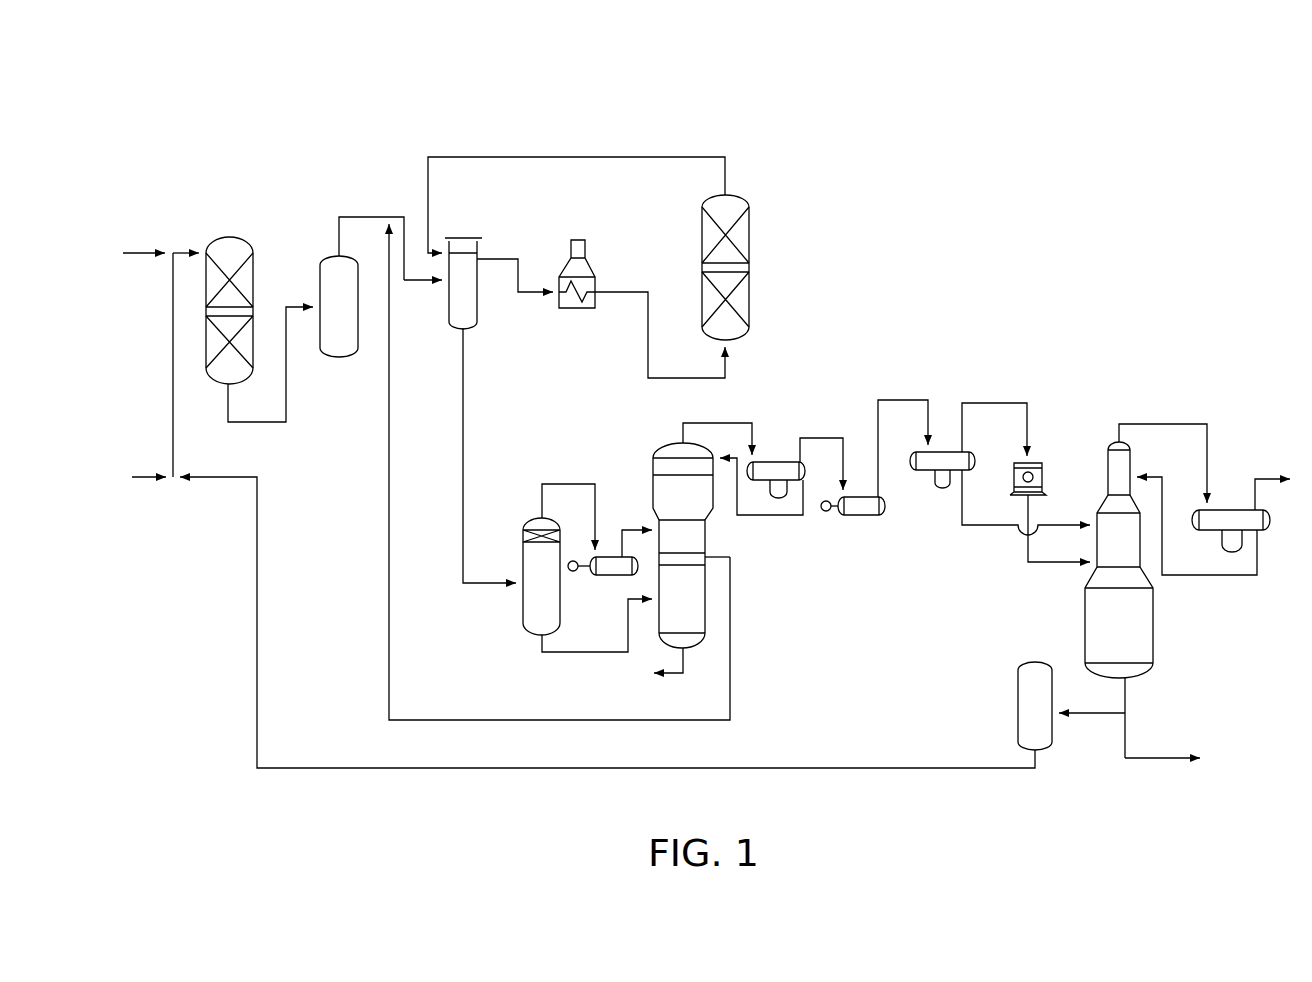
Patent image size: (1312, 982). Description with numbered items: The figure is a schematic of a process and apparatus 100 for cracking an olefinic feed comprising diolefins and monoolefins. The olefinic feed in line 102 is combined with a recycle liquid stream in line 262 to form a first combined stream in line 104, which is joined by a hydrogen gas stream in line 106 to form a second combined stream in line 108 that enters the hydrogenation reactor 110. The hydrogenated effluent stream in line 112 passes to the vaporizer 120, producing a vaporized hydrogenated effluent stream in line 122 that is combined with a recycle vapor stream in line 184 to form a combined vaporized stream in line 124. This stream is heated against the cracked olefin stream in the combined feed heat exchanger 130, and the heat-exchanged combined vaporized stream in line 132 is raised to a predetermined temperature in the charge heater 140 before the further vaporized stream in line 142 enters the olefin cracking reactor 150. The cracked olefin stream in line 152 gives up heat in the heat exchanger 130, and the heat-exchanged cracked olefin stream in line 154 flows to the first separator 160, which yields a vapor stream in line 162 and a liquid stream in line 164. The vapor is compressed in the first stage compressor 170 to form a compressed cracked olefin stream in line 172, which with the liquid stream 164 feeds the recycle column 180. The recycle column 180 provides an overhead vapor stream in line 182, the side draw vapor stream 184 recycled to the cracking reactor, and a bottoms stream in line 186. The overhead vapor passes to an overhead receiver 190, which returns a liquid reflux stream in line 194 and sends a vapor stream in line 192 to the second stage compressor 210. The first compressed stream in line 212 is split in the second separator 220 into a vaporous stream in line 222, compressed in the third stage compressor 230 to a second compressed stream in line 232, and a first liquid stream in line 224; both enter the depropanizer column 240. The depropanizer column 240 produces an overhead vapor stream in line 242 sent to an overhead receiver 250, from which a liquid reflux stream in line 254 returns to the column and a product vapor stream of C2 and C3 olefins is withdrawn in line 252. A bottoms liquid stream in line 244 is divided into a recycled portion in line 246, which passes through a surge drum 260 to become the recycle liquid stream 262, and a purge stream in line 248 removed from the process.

The process and apparatus 100 is at (355, 145).
The olefinic feed line 102 is at (165, 475).
The first combined stream line 104 is at (172, 325).
The hydrogen gas stream line 106 is at (152, 262).
The second combined stream line 108 is at (200, 250).
The hydrogenation reactor 110 is at (253, 262).
The hydrogenated effluent stream line 112 is at (262, 422).
The vaporizer 120 is at (342, 360).
The vaporized hydrogenated effluent stream line 122 is at (356, 217).
The combined vaporized stream line 124 is at (425, 282).
The combined feed heat exchanger 130 is at (470, 238).
The heat-exchanged combined vaporized stream line 132 is at (515, 288).
The charge heater 140 is at (585, 262).
The further vaporized stream line 142 is at (645, 305).
The olefin cracking reactor 150 is at (750, 250).
The cracked olefin stream line 152 is at (665, 157).
The heat-exchanged cracked olefin stream line 154 is at (463, 432).
The first separator 160 is at (522, 565).
The vapor stream line 162 is at (583, 482).
The liquid stream line 164 is at (574, 654).
The first stage compressor 170 is at (617, 578).
The compressed cracked olefin stream line 172 is at (650, 527).
The recycle column 180 is at (650, 492).
The overhead vapor stream line 182 is at (720, 423).
The side draw vapor stream line 184 is at (731, 662).
The recycle column bottoms stream line 186 is at (666, 676).
The overhead receiver 190 is at (792, 460).
The vapor stream line 192 is at (841, 438).
The liquid reflux stream line 194 is at (790, 518).
The second stage compressor 210 is at (866, 518).
The first compressed stream line 212 is at (918, 400).
The second separator 220 is at (936, 486).
The vaporous stream line 222 is at (1015, 402).
The first liquid stream line 224 is at (970, 527).
The third stage compressor 230 is at (1040, 463).
The second compressed stream line 232 is at (1058, 565).
The depropanizer column 240 is at (1084, 650).
The overhead vapor stream line 242 is at (1185, 424).
The bottoms liquid stream line 244 is at (1127, 708).
The recycled bottoms liquid stream line 246 is at (1090, 715).
The purge stream line 248 is at (1196, 757).
The overhead receiver 250 is at (1197, 527).
The product vapor stream line 252 is at (1286, 478).
The liquid reflux stream line 254 is at (1246, 576).
The surge drum 260 is at (1017, 709).
The recycle liquid stream line 262 is at (850, 767).